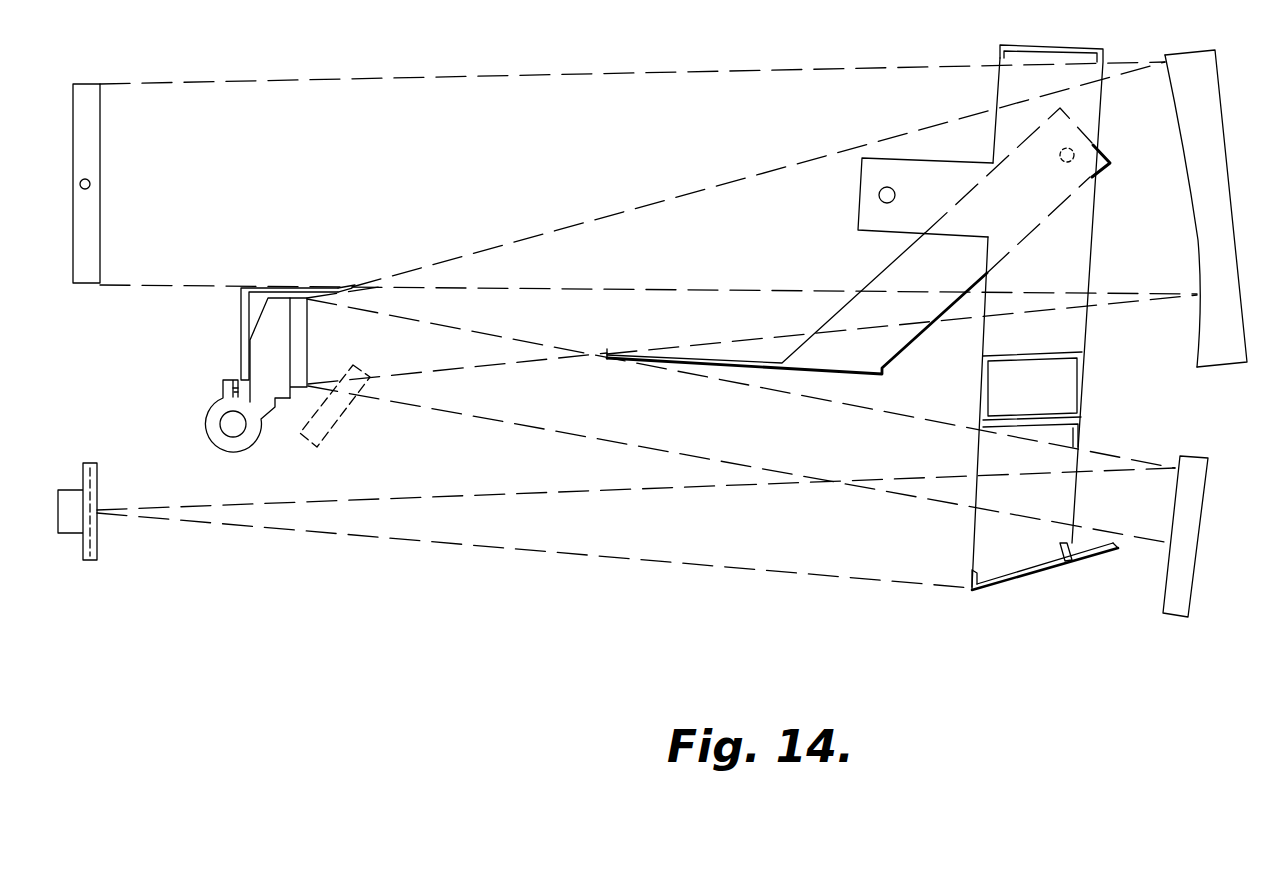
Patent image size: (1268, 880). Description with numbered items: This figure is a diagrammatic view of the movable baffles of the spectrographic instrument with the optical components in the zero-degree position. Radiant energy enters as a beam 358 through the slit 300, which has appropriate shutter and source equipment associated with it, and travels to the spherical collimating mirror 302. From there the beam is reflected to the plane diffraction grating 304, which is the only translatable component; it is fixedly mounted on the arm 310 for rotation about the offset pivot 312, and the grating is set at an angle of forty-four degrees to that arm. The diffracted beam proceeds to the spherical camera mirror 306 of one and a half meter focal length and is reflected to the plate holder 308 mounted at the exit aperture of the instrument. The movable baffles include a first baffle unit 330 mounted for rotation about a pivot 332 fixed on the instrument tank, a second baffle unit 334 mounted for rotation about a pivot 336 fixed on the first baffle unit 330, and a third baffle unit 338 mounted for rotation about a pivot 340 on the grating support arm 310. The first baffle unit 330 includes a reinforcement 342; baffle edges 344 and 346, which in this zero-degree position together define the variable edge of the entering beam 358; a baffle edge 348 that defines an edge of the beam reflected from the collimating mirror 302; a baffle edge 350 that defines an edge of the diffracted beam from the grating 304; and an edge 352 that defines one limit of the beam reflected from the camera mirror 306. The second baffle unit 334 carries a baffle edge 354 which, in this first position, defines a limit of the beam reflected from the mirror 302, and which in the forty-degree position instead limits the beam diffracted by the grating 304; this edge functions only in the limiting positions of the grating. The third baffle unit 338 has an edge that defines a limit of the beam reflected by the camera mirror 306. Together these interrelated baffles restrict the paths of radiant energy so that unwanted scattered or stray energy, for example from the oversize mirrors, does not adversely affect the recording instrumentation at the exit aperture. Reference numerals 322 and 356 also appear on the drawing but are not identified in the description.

The slit 300 is at (98, 513).
The spherical collimating mirror 302 is at (1170, 590).
The plane diffraction grating 304 is at (295, 302).
The spherical camera mirror 306 is at (1192, 203).
The plate holder 308 is at (90, 277).
The arm 310 is at (222, 445).
The offset pivot 312 is at (225, 421).
The pivot 322 is at (90, 182).
The first baffle unit 330 is at (1042, 578).
The pivot 332 is at (878, 196).
The second baffle unit 334 is at (768, 332).
The pivot 336 is at (1079, 150).
The third baffle unit 338 is at (322, 288).
The pivot 340 is at (236, 380).
The reinforcement 342 is at (972, 572).
The baffle edge 344 is at (1062, 543).
The baffle edge 346 is at (1113, 545).
The baffle edge 348 is at (1082, 447).
The baffle edge 350 is at (1103, 293).
The edge 352 is at (1103, 60).
The baffle edge 354 is at (607, 357).
The light ray 356 is at (348, 290).
The beam 358 is at (556, 555).